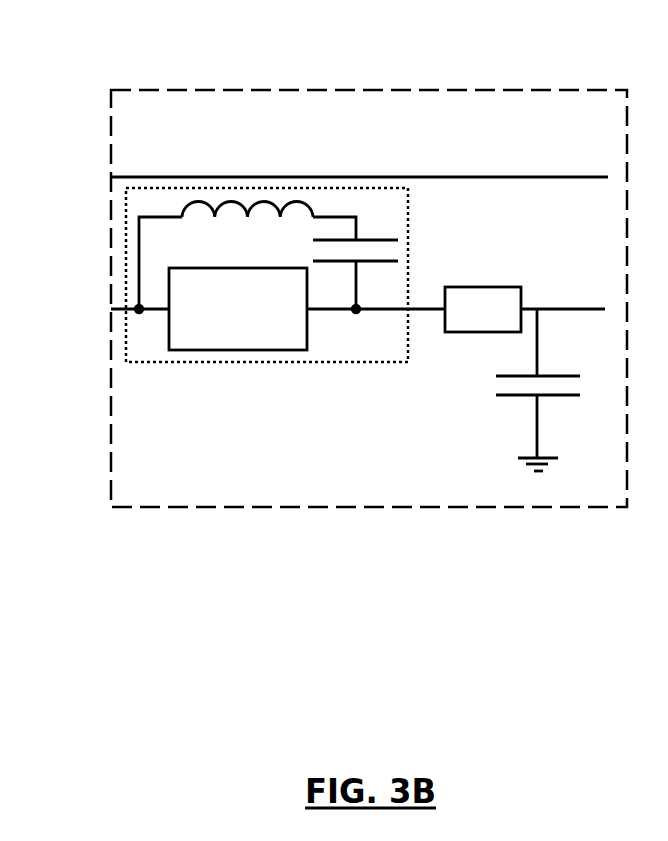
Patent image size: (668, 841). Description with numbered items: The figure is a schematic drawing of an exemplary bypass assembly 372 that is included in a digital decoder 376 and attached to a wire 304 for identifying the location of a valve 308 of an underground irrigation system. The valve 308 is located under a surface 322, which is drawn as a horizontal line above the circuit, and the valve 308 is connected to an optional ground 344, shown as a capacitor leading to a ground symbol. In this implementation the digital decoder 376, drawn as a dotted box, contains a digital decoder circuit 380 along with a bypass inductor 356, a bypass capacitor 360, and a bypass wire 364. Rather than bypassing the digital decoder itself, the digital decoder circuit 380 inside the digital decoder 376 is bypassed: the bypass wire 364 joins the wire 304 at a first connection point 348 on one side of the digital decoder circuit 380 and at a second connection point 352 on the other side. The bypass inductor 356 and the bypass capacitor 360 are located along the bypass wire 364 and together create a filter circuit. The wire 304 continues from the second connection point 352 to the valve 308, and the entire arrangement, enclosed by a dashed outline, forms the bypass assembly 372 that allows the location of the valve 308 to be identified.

The bypass assembly 372 is at (172, 87).
The surface 322 is at (223, 177).
The bypass wire 364 is at (139, 245).
The wire 304 is at (122, 307).
The first connection point 348 is at (139, 309).
The digital decoder circuit 380 is at (184, 352).
The bypass inductor 356 is at (308, 195).
The bypass capacitor 360 is at (373, 238).
The digital decoder 376 is at (410, 238).
The second connection point 352 is at (356, 309).
The valve 308 is at (480, 332).
The ground 344 is at (537, 342).